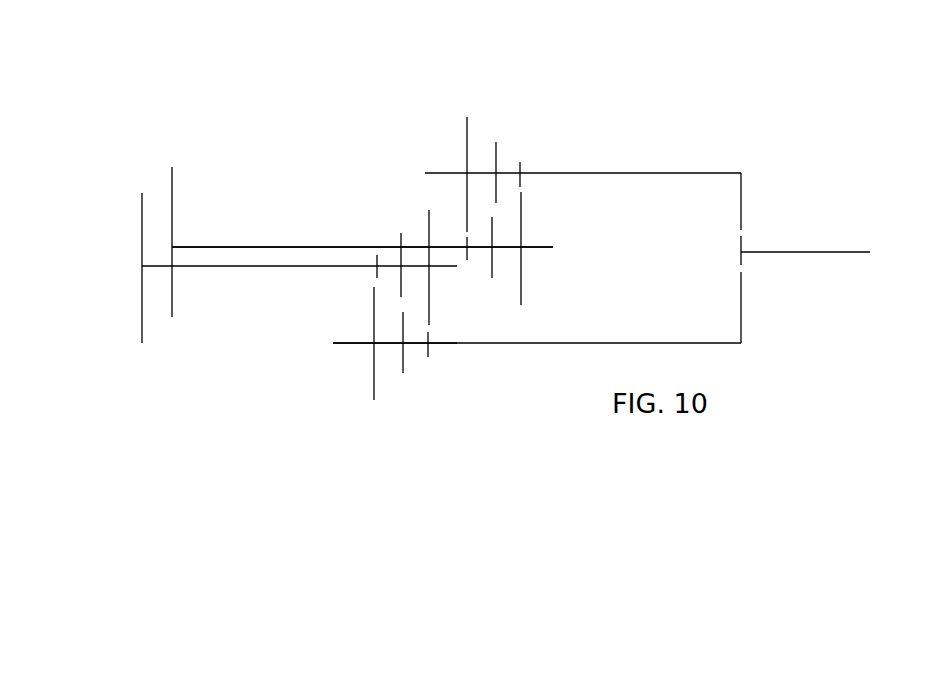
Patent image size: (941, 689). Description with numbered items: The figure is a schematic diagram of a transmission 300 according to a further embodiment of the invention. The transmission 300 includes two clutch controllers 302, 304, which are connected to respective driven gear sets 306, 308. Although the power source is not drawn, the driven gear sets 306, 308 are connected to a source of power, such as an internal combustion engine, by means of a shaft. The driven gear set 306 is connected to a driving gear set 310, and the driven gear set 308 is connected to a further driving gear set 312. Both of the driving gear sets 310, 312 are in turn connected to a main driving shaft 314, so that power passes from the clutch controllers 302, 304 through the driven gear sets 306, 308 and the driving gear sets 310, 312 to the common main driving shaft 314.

The transmission 300 is at (280, 135).
The clutch controller 302 is at (141, 222).
The clutch controller 304 is at (172, 190).
The driven gear set 306 is at (373, 222).
The driven gear set 308 is at (538, 211).
The driving gear set 310 is at (416, 400).
The further driving gear set 312 is at (504, 127).
The main driving shaft 314 is at (815, 252).